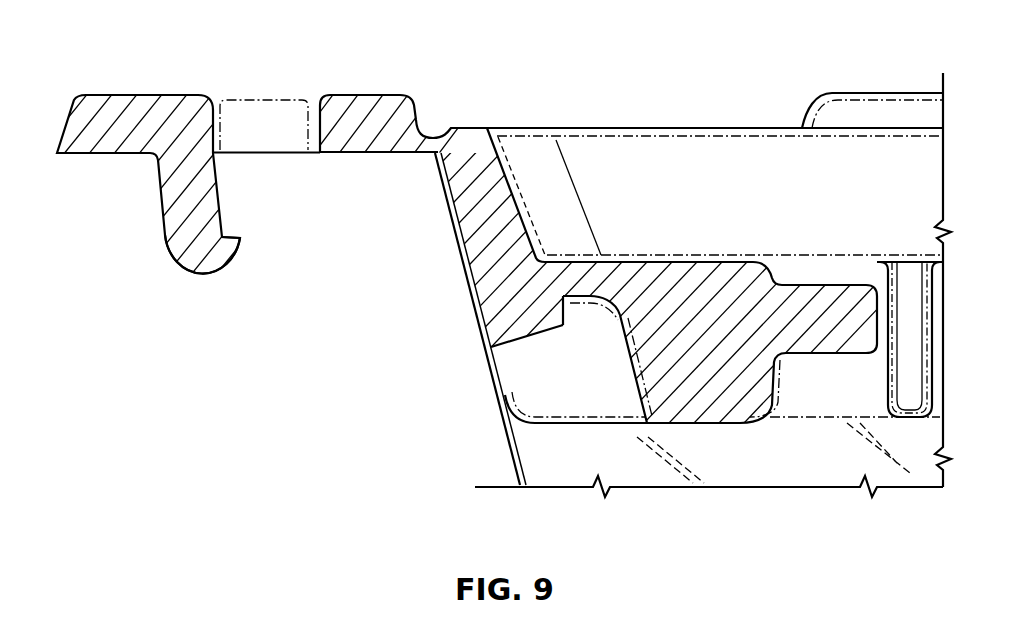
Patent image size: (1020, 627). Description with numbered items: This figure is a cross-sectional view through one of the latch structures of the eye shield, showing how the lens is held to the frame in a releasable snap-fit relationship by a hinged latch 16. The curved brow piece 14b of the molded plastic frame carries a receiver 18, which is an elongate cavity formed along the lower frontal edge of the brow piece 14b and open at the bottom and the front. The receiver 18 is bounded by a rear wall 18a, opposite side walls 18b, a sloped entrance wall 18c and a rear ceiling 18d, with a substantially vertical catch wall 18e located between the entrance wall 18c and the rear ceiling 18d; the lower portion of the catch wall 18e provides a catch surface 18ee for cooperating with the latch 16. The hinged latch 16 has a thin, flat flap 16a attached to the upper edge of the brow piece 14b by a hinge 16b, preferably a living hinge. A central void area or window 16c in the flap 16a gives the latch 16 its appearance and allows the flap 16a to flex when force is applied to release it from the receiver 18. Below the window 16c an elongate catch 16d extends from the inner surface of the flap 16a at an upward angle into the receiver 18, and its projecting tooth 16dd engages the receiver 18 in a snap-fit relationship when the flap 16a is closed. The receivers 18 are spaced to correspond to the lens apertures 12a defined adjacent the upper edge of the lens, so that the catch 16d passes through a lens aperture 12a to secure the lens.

The lens aperture 12a is at (503, 410).
The curved brow piece 14b is at (712, 203).
The hinged latch 16 is at (110, 60).
The flap 16a is at (372, 95).
The hinge 16b is at (443, 133).
The window 16c is at (262, 98).
The elongate catch 16d is at (207, 273).
The projecting tooth 16dd is at (240, 237).
The receiver 18 is at (535, 374).
The rear wall 18a is at (630, 345).
The side wall 18b is at (510, 357).
The sloped entrance wall 18c is at (537, 332).
The rear ceiling 18d is at (578, 292).
The catch wall 18e is at (563, 302).
The catch surface 18ee is at (568, 325).